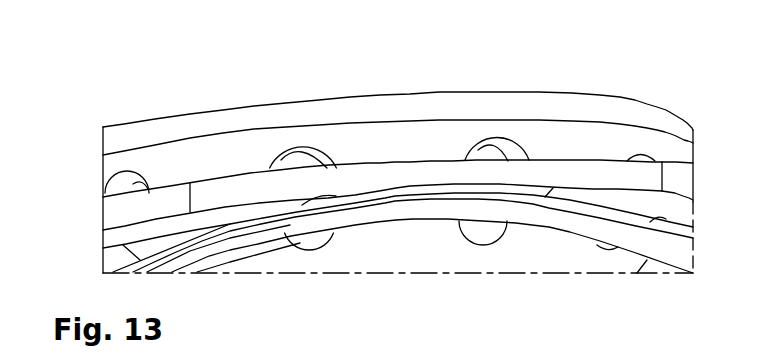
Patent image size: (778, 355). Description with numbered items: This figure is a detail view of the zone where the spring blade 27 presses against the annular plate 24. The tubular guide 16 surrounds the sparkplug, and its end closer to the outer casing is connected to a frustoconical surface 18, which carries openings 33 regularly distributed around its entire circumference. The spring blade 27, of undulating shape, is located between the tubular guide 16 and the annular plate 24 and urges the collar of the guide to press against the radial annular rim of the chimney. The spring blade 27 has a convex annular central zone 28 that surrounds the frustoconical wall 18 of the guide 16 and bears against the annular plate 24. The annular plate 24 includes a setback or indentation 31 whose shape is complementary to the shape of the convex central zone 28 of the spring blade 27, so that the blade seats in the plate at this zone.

The guide 16 is at (194, 90).
The frustoconical surface 18 is at (565, 140).
The openings 33 is at (304, 163).
The annular plate 24 is at (673, 180).
The setback or indentation 31 is at (423, 190).
The convex annular central zone 28 is at (245, 237).
The spring blade 27 is at (585, 220).